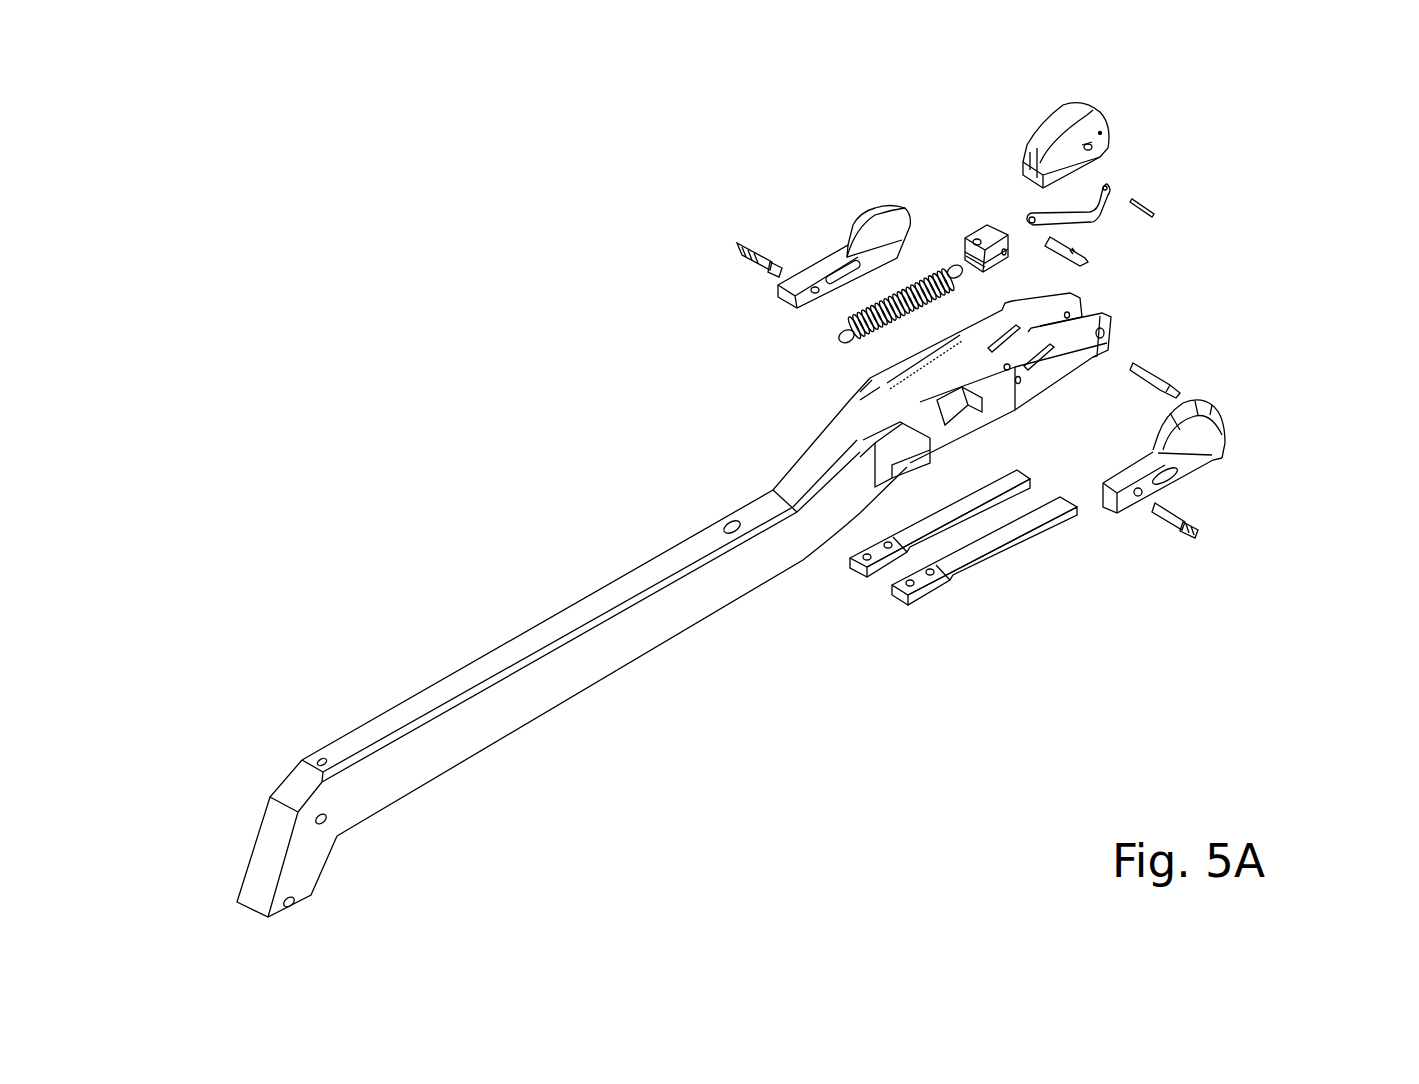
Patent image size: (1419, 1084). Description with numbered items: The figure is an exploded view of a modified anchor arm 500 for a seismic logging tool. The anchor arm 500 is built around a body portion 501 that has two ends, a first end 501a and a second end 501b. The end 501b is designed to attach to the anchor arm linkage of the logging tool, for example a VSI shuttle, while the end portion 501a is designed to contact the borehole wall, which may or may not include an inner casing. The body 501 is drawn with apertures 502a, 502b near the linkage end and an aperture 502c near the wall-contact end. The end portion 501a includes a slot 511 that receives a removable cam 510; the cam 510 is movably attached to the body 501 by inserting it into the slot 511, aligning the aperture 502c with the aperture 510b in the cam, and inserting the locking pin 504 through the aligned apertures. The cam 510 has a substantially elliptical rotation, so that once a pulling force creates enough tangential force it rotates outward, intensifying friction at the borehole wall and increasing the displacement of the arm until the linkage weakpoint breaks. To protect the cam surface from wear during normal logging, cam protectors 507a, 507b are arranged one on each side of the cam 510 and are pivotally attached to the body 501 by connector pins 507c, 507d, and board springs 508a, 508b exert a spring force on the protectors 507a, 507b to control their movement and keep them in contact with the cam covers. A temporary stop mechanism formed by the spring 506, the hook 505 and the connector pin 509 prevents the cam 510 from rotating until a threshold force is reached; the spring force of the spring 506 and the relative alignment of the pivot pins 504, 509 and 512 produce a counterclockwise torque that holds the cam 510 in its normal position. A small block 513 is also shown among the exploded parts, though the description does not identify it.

The modified anchor arm 500 is at (453, 380).
The body portion 501 is at (627, 662).
The end portion 501a is at (1282, 262).
The end portion 501b is at (235, 805).
The aperture 502a is at (326, 824).
The aperture 502b is at (295, 906).
The aperture 502c is at (1110, 332).
The locking pin 504 is at (1185, 388).
The hook 505 is at (1108, 183).
The spring 506 is at (866, 340).
The cam protector 507a is at (893, 205).
The cam protector 507b is at (1228, 445).
The connector pin 507c is at (745, 248).
The connector pin 507d is at (1190, 537).
The board spring 508a is at (850, 573).
The board spring 508b is at (922, 600).
The connector pin 509 is at (1140, 202).
The cam 510 is at (1100, 115).
The aperture 510b is at (1093, 145).
The slot 511 is at (1100, 302).
The pivot pin 512 is at (1060, 252).
The block 513 is at (993, 223).